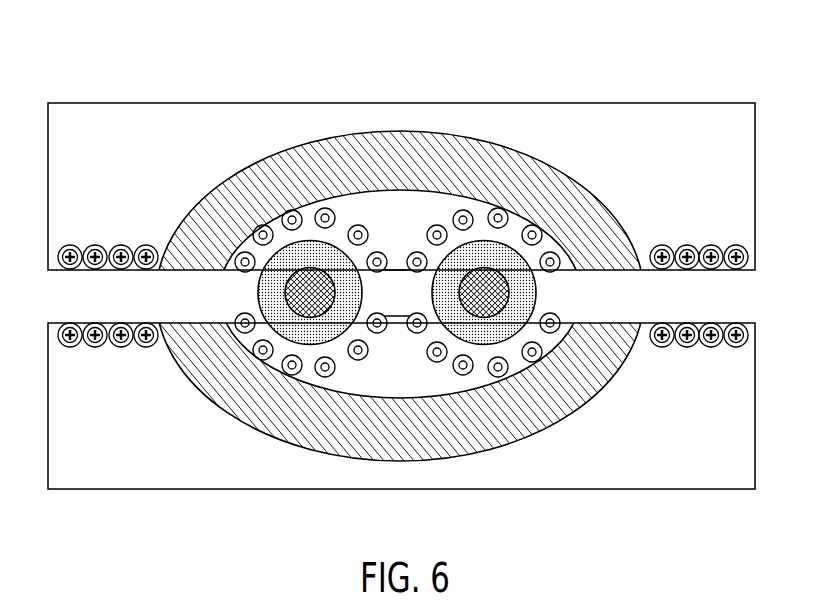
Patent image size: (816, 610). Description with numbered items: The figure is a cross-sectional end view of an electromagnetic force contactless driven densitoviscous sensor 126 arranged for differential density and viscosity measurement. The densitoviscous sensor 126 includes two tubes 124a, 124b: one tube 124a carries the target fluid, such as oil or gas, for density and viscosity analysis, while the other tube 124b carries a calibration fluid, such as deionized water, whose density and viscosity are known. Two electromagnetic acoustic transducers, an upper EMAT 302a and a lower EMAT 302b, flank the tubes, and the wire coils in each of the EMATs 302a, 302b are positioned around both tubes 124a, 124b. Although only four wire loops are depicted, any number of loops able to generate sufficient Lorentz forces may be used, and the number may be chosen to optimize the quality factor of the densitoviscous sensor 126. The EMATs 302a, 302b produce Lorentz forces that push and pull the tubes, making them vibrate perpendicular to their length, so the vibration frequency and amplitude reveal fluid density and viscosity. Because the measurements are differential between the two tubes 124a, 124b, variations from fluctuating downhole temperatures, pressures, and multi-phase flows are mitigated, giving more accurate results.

The densitoviscous sensor 126 is at (210, 68).
The EMAT 302a is at (671, 118).
The EMAT 302b is at (686, 468).
The tube 124a is at (254, 299).
The tube 124b is at (541, 298).